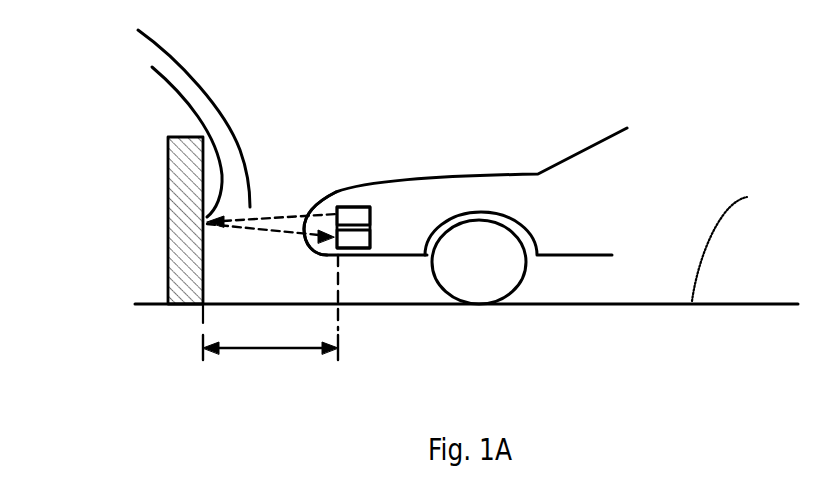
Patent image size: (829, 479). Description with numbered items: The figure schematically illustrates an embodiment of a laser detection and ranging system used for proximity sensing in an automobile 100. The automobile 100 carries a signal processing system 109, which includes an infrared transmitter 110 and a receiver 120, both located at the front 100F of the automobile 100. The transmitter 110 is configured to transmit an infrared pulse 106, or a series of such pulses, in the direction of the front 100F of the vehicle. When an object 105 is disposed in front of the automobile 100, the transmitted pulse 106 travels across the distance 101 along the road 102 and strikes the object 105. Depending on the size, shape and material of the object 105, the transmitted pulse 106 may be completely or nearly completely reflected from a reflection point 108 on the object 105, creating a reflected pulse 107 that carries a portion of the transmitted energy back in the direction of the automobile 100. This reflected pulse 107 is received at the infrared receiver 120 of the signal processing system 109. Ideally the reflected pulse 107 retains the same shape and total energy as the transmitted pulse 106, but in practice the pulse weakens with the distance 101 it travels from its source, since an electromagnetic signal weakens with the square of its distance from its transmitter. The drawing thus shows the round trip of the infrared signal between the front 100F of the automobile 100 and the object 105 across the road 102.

The automobile 100 is at (483, 190).
The front of the automobile 100F is at (307, 198).
The distance 101 is at (270, 327).
The road 102 is at (741, 242).
The object 105 is at (189, 135).
The transmitted pulse 106 is at (166, 110).
The reflected pulse 107 is at (242, 242).
The reflection point 108 is at (152, 133).
The signal processing system 109 is at (378, 225).
The infrared transmitter 110 is at (352, 217).
The receiver 120 is at (350, 240).